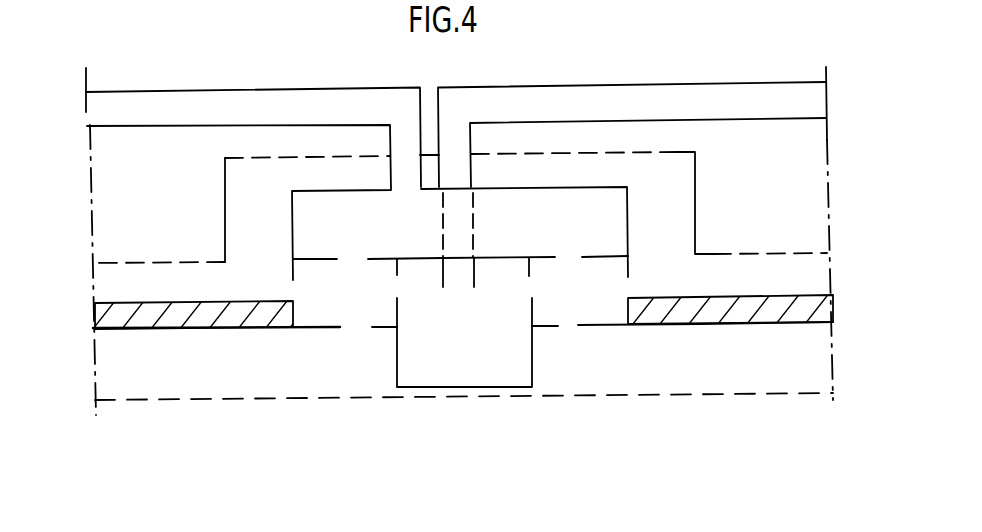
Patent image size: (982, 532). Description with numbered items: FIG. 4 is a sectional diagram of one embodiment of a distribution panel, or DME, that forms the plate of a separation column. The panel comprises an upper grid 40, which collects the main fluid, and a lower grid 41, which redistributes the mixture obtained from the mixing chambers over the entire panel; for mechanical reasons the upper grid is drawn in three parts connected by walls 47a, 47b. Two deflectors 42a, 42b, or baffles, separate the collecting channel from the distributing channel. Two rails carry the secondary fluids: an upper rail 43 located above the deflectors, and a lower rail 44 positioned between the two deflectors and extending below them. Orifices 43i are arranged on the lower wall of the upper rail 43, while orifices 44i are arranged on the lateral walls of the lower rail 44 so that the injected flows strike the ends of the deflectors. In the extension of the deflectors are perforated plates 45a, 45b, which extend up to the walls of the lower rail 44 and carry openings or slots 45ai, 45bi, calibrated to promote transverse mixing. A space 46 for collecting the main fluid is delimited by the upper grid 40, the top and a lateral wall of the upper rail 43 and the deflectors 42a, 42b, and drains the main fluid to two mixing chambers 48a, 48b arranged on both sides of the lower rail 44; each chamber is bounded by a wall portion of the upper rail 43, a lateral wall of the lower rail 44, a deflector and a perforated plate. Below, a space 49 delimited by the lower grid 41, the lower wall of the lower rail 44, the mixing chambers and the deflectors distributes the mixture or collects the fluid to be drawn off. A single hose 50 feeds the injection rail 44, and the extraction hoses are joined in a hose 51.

The upper grid 40 is at (678, 151).
The lower grid 41 is at (725, 398).
The deflector 42a is at (825, 310).
The deflector 42b is at (107, 315).
The upper rail 43 is at (515, 243).
The orifices 43i is at (568, 259).
The lower rail 44 is at (472, 362).
The orifices 44i is at (527, 283).
The perforated plate 45a is at (543, 330).
The openings 45ai is at (580, 326).
The perforated plate 45b is at (388, 332).
The openings 45bi is at (347, 330).
The space for collecting the main fluid 46 is at (832, 282).
The wall 47a is at (696, 183).
The wall 47b is at (224, 176).
The mixing chamber 48a is at (593, 310).
The mixing chamber 48b is at (368, 313).
The space for distributing the mixture 49 is at (815, 365).
The hose 50 is at (263, 100).
The hose 51 is at (670, 98).